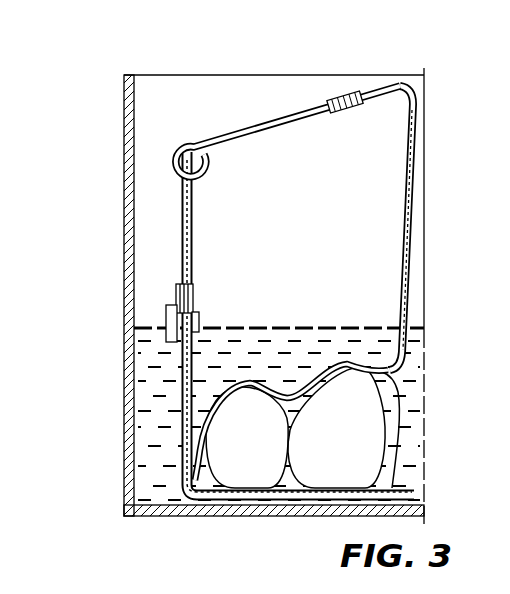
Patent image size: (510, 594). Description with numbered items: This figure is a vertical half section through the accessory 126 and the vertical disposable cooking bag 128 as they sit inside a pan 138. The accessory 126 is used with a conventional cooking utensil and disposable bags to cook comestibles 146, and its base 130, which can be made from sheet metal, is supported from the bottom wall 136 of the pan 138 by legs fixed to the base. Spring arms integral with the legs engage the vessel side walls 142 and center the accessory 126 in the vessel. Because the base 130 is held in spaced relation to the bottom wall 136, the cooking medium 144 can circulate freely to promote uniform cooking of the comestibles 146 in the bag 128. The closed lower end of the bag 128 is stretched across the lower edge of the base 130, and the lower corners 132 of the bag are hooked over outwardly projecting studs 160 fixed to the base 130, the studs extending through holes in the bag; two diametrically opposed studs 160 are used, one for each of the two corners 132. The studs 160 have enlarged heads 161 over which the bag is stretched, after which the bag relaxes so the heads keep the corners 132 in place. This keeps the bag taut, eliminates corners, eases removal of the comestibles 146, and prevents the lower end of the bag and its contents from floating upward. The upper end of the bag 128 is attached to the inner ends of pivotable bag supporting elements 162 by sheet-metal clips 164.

The accessory 126 is at (292, 200).
The disposable cooking bag 128 is at (402, 192).
The accessory base 130 is at (178, 221).
The lower corners 132 is at (174, 291).
The bottom wall 136 is at (205, 512).
The pan 138 is at (221, 314).
The vessel side walls 142 is at (127, 133).
The cooking medium 144 is at (152, 370).
The comestibles 146 is at (382, 370).
The studs 160 is at (202, 319).
The enlarged heads 161 is at (166, 320).
The pivotable bag supporting elements 162 is at (222, 125).
The clips 164 is at (344, 118).